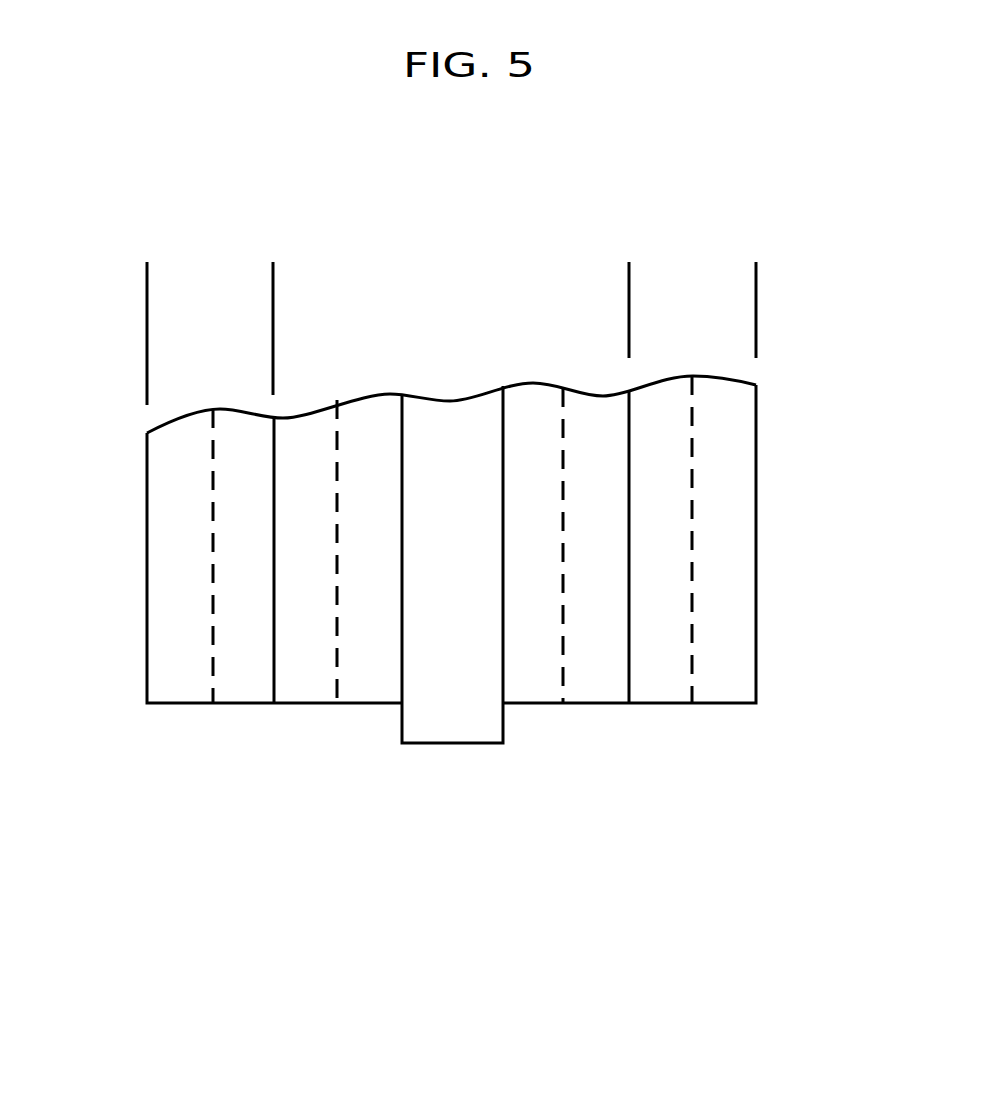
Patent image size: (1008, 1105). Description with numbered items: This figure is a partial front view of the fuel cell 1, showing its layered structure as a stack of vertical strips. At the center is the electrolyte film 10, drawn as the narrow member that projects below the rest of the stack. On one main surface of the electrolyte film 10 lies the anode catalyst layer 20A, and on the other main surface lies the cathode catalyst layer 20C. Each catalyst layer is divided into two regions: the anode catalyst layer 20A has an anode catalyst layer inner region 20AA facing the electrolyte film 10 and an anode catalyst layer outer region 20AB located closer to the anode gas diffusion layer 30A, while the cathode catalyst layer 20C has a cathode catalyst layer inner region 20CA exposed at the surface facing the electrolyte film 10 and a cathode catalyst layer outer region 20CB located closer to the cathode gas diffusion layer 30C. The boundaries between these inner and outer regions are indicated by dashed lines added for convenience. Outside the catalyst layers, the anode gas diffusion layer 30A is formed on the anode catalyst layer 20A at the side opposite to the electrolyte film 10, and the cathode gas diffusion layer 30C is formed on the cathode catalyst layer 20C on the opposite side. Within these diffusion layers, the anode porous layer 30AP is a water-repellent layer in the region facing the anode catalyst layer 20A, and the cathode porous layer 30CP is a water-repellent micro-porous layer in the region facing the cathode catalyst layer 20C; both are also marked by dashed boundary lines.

The fuel cell 1 is at (468, 218).
The electrolyte film 10 is at (452, 713).
The anode catalyst layer 20A is at (165, 947).
The anode catalyst layer inner region 20AA is at (365, 678).
The anode catalyst layer outer region 20AB is at (298, 678).
The cathode catalyst layer 20C is at (506, 947).
The cathode catalyst layer inner region 20CA is at (523, 678).
The cathode catalyst layer outer region 20CB is at (592, 678).
The anode gas diffusion layer 30A is at (147, 250).
The anode porous layer 30AP is at (240, 678).
The cathode gas diffusion layer 30C is at (629, 250).
The cathode porous layer 30CP is at (660, 677).